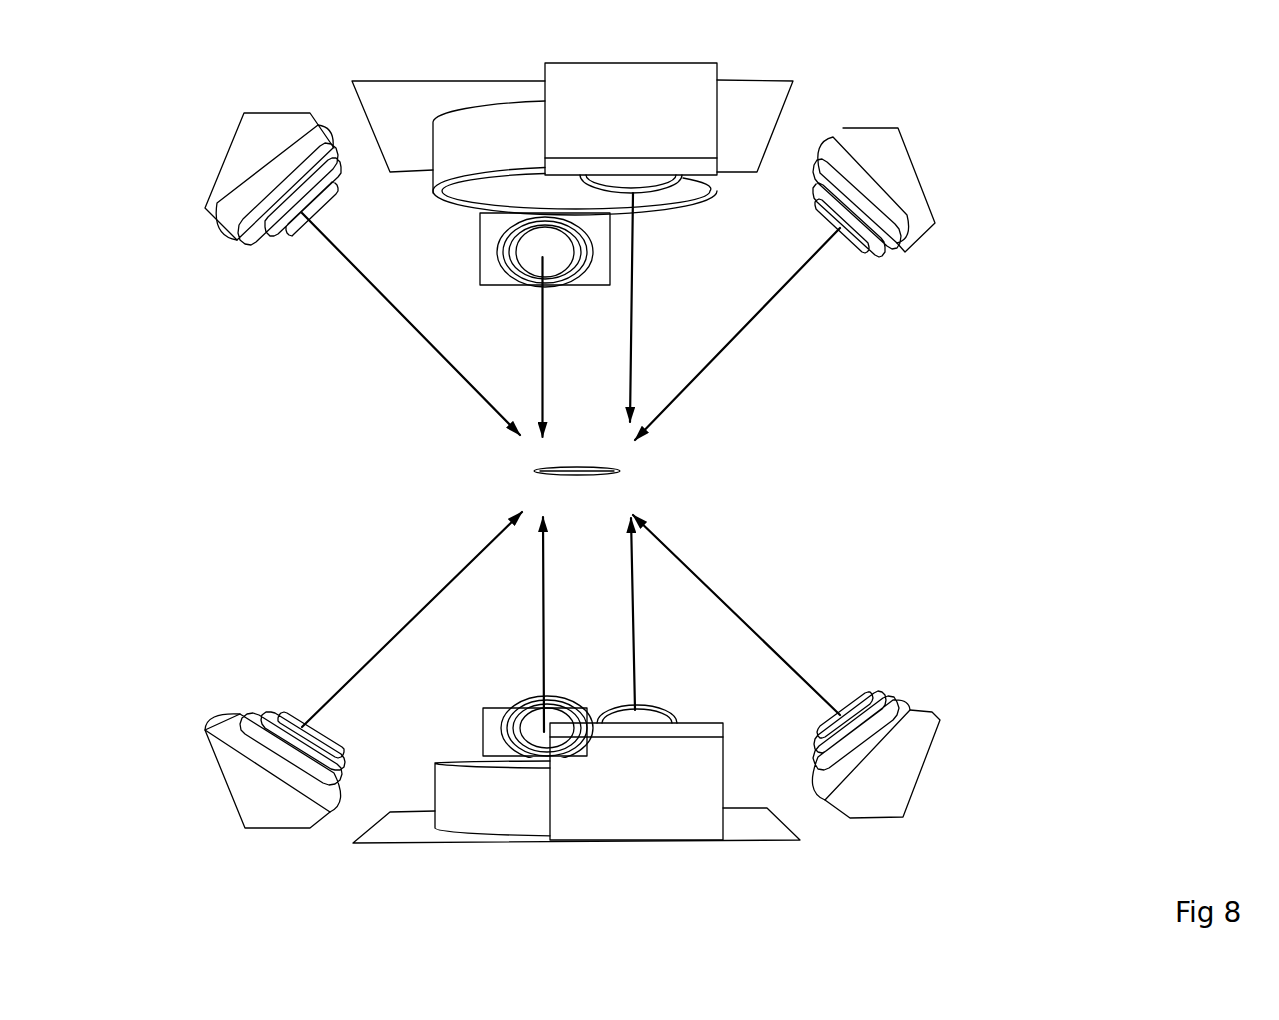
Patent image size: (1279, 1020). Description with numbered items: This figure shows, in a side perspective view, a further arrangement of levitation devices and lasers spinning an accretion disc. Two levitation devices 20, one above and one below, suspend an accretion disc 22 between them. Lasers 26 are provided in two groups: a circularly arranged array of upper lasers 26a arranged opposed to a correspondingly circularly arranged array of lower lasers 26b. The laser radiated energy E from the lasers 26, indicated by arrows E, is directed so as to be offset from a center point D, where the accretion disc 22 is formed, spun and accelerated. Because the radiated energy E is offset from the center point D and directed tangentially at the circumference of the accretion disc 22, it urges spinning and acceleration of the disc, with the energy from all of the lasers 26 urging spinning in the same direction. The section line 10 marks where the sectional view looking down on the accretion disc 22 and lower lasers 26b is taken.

The section line 10 is at (330, 408).
The levitation device 20 is at (477, 105).
The accretion disc 22 is at (612, 475).
The lasers 26 is at (972, 136).
The upper lasers 26a is at (700, 82).
The lower lasers 26b is at (492, 712).
The center point D is at (578, 468).
The laser radiated energy E is at (571, 462).